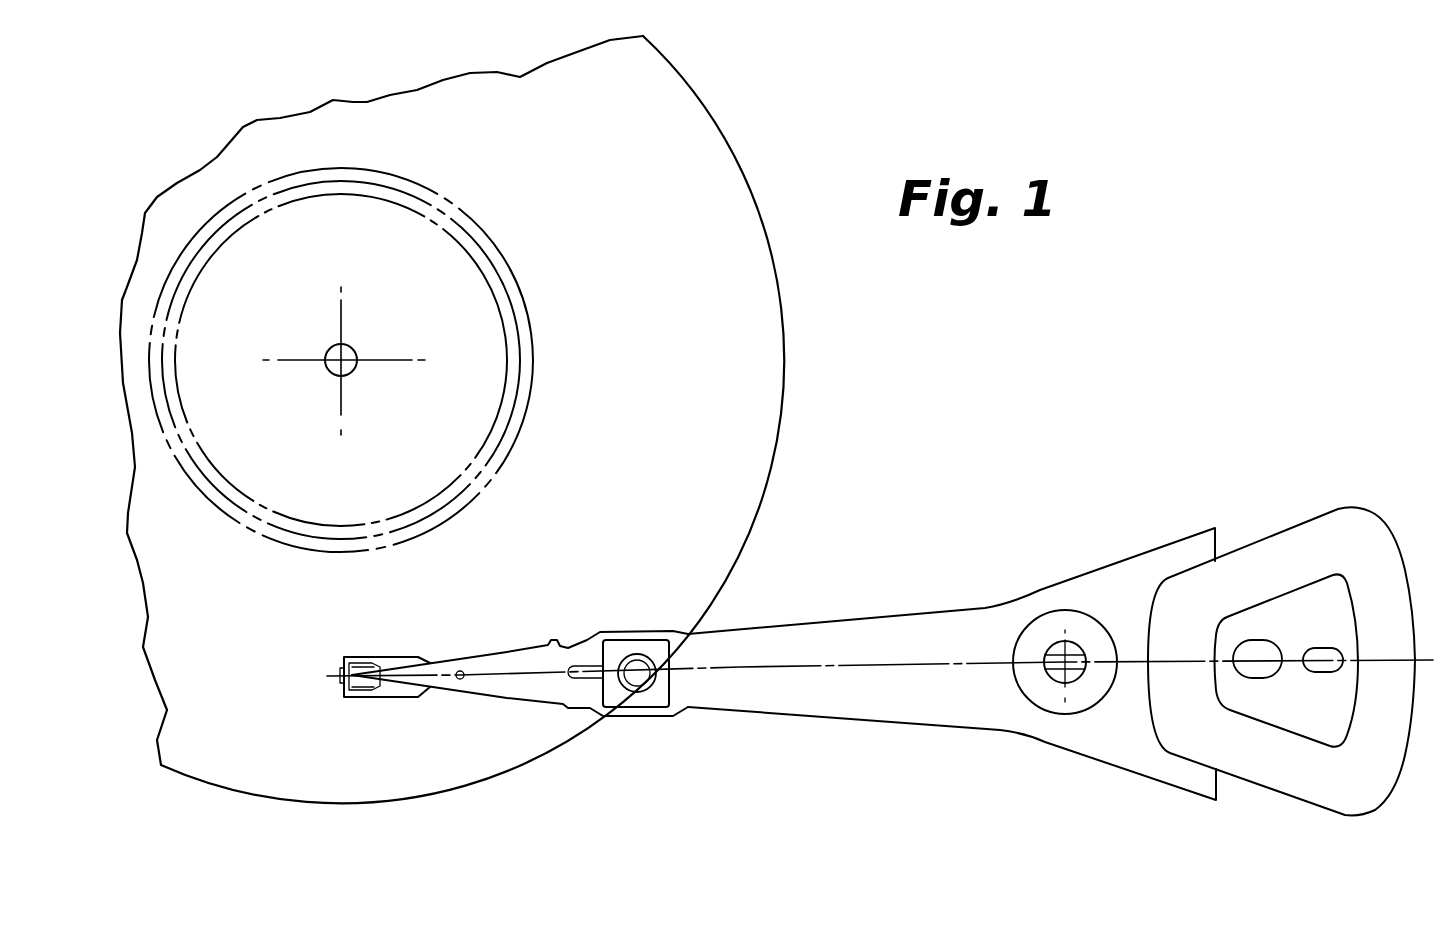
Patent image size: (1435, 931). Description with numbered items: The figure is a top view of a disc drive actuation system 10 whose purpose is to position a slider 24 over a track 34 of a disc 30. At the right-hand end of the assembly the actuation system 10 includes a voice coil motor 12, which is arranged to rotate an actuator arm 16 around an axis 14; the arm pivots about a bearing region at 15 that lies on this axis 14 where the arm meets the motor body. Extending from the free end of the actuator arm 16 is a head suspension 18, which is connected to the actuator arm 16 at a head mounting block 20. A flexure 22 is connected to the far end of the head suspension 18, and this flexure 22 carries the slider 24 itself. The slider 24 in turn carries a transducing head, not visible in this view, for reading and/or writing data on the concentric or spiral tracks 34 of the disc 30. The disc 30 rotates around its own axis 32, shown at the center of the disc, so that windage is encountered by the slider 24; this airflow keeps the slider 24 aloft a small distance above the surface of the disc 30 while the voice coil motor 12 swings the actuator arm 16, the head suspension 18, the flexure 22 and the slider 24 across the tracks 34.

The disc drive actuation system 10 is at (1017, 472).
The voice coil motor 12 is at (1388, 528).
The axis 14 is at (1053, 680).
The pivot bearing 15 is at (1073, 642).
The actuator arm 16 is at (883, 618).
The head suspension 18 is at (503, 649).
The head mounting block 20 is at (640, 638).
The flexure 22 is at (397, 653).
The slider 24 is at (337, 690).
The disc 30 is at (778, 433).
The axis 32 is at (357, 368).
The tracks 34 is at (505, 462).